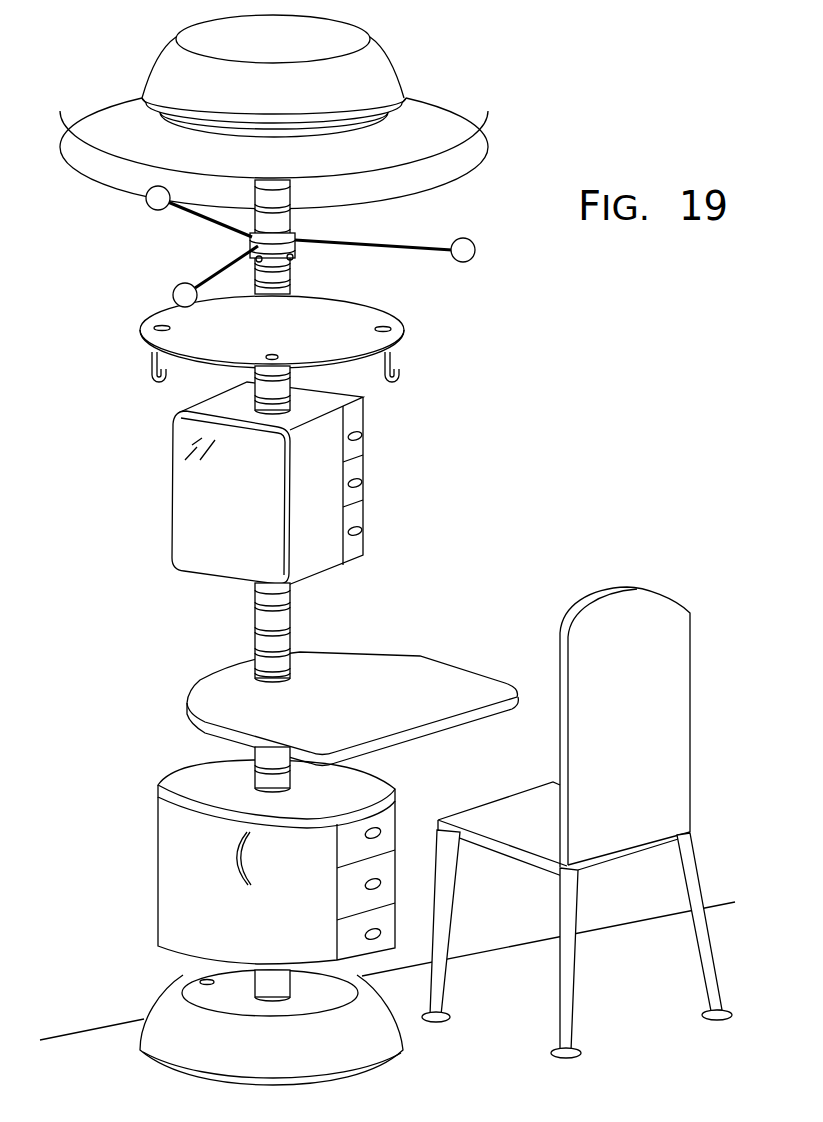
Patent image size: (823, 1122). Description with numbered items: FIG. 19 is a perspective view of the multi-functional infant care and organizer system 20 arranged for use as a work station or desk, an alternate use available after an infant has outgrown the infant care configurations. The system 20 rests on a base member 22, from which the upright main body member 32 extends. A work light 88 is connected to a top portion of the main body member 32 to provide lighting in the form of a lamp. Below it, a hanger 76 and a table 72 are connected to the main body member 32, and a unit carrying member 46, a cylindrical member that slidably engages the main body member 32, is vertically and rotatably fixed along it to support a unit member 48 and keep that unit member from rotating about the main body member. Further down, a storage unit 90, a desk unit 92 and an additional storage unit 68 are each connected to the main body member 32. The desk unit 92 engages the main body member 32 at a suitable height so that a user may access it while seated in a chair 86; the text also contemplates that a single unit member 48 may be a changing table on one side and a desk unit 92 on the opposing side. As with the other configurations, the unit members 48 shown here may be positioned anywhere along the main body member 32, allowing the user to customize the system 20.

The multi-functional infant care and organizer system 20 is at (548, 393).
The base member 22 is at (150, 1000).
The main body member 32 is at (293, 613).
The unit carrying member 46 is at (296, 258).
The unit member 48 is at (143, 200).
The additional storage unit 68 is at (147, 835).
The table 72 is at (410, 320).
The hanger 76 is at (453, 240).
The chair 86 is at (660, 582).
The work light 88 is at (480, 70).
The storage unit 90 is at (162, 494).
The desk unit 92 is at (455, 655).